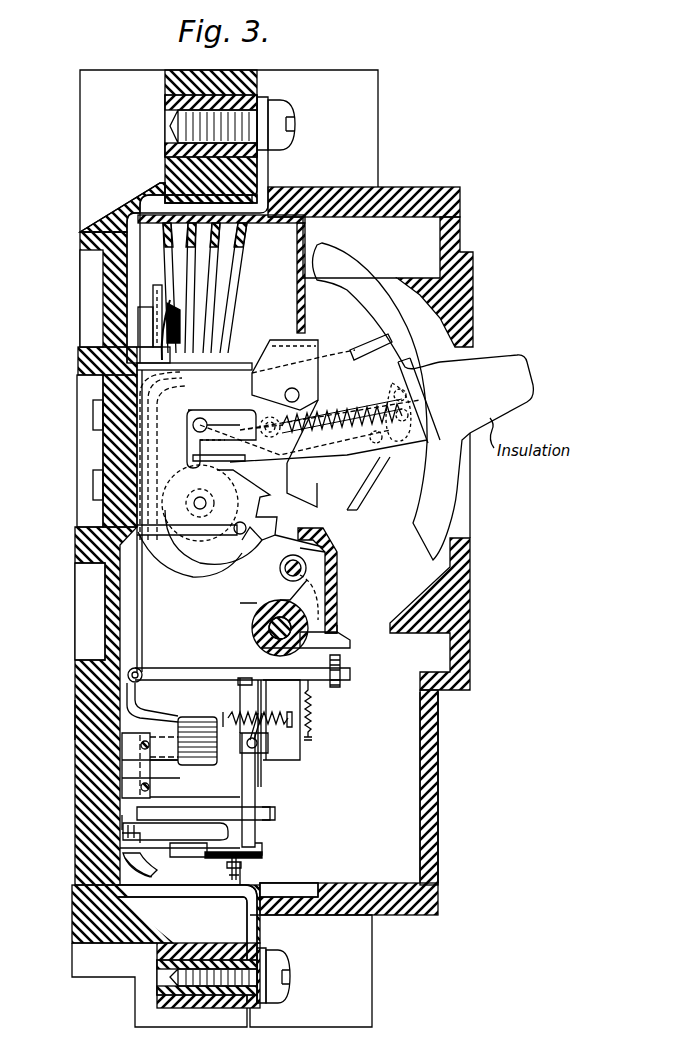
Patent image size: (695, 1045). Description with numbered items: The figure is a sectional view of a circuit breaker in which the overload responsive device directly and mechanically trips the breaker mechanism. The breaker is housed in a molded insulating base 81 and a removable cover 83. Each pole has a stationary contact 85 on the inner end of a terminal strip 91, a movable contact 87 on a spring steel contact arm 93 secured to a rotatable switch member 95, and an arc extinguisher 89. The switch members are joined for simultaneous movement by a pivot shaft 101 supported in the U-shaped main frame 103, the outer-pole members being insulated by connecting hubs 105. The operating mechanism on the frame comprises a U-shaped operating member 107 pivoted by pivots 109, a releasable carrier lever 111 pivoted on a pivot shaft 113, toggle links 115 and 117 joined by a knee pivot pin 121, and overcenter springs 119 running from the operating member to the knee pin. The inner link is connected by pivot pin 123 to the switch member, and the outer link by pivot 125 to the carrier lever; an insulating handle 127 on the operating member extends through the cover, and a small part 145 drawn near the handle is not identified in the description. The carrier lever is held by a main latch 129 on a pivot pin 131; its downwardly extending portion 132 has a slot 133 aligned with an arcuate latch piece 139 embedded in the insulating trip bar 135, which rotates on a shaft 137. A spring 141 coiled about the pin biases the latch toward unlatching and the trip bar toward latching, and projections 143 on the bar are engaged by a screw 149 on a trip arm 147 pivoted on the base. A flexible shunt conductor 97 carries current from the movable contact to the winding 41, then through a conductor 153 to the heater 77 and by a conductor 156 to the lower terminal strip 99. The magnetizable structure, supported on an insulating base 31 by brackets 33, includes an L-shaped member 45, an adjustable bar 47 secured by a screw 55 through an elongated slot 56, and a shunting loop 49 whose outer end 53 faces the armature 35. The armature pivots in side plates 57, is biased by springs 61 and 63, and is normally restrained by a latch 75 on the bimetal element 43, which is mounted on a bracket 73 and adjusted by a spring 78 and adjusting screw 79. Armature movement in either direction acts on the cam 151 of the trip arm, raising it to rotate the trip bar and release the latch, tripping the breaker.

The insulating base 31 is at (124, 763).
The brackets 33 is at (128, 778).
The movable armature 35 is at (256, 771).
The winding 41 is at (210, 708).
The bimetal element 43 is at (222, 863).
The L-shaped member 45 is at (160, 733).
The adjustable bar 47 is at (194, 827).
The shunting member 49 is at (184, 805).
The outer end of loop 53 is at (272, 813).
The screw 55 is at (128, 833).
The elongated slot 56 is at (125, 815).
The side plates 57 is at (237, 735).
The spring 61 is at (276, 722).
The spring 63 is at (236, 708).
The bracket 73 is at (125, 858).
The latch 75 is at (263, 842).
The heater 77 is at (192, 857).
The spring 78 is at (250, 861).
The adjusting screw 79 is at (247, 885).
The base 81 is at (76, 718).
The cover 83 is at (440, 742).
The stationary contact 85 is at (143, 327).
The movable contact 87 is at (157, 290).
The arc extinguisher 89 is at (256, 284).
The terminal strip 91 is at (269, 172).
The contact arm 93 is at (162, 400).
The switch member 95 is at (242, 505).
The flexible shunt conductor 97 is at (142, 609).
The terminal conducting strip 99 is at (258, 893).
The pivot shaft 101 is at (197, 507).
The main frame 103 is at (219, 515).
The insulating connecting hubs 105 is at (182, 577).
The operating member 107 is at (387, 472).
The pivots 109 is at (246, 457).
The releasable carrier lever 111 is at (380, 480).
The pivot shaft 113 is at (292, 395).
The toggle link 115 is at (260, 420).
The toggle link 117 is at (358, 462).
The overcenter springs 119 is at (402, 388).
The knee pivot pin 121 is at (283, 398).
The pivot pin 123 is at (221, 439).
The pivot 125 is at (369, 437).
The handle 127 is at (486, 369).
The main latch 129 is at (337, 566).
The pivot pin 131 is at (290, 578).
The downwardly extending portion 132 is at (337, 582).
The slot 133 is at (337, 598).
The trip bar 135 is at (258, 645).
The shaft 137 is at (255, 627).
The latch piece 139 is at (337, 618).
The spring 141 is at (280, 560).
The projections 143 is at (350, 646).
The latch 145 is at (366, 345).
The trip arm 147 is at (163, 671).
The screw 149 is at (341, 676).
The cam 151 is at (262, 672).
The conductor 153 is at (260, 800).
The conductor 156 is at (150, 875).